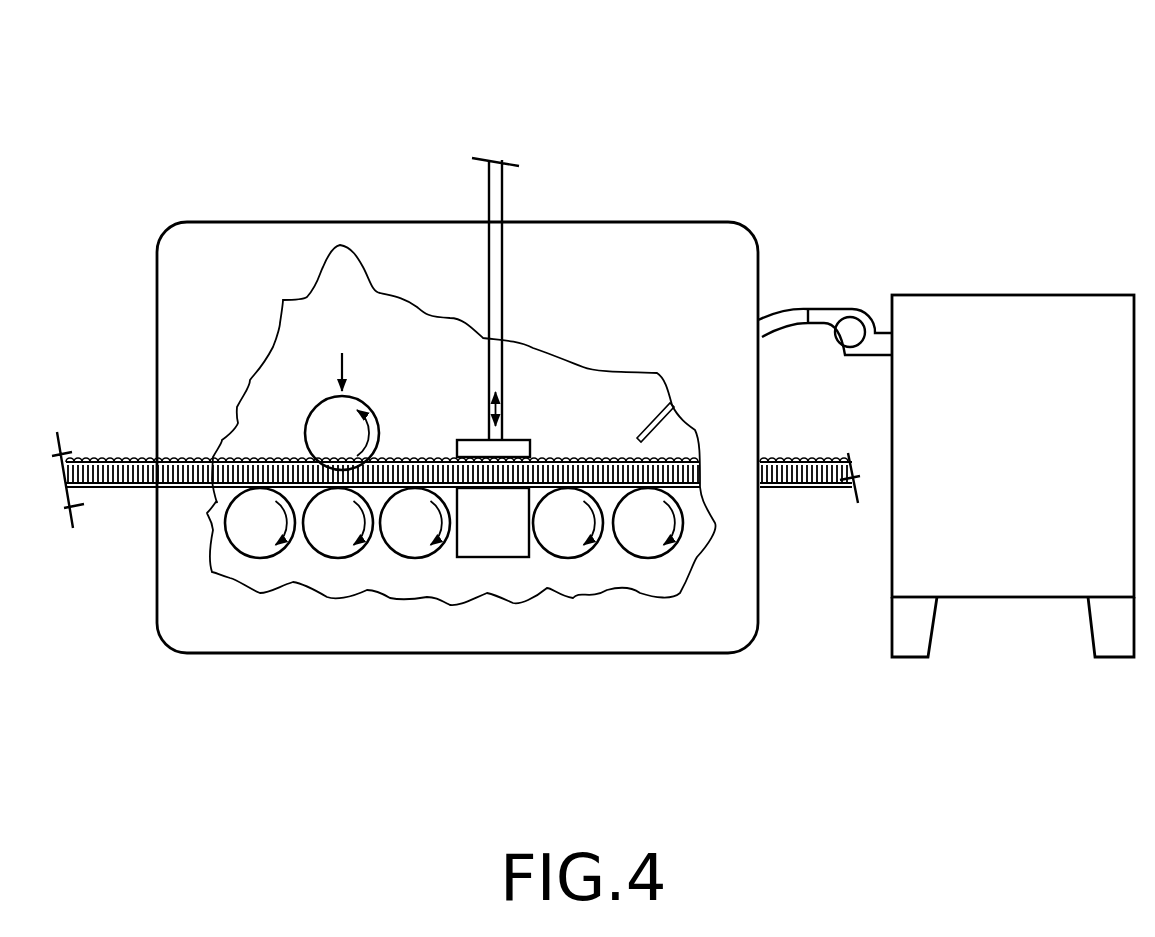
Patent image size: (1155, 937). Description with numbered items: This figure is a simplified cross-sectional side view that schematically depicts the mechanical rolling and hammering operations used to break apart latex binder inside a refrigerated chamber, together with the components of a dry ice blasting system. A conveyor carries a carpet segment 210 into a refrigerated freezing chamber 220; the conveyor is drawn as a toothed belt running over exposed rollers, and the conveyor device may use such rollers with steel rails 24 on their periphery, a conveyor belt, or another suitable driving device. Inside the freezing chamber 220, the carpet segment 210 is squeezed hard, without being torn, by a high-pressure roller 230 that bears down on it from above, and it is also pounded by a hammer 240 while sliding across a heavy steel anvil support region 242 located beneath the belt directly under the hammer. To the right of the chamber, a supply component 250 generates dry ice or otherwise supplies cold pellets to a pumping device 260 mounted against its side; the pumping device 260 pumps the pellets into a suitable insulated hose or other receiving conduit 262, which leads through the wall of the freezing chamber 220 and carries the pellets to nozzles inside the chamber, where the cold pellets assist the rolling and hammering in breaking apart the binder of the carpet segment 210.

The steel rails 24 is at (793, 460).
The carpet segment 210 is at (93, 458).
The refrigerated freezing chamber 220 is at (275, 219).
The high-pressure roller 230 is at (381, 406).
The hammer 240 is at (523, 410).
The heavy steel anvil support region 242 is at (497, 561).
The supply component 250 is at (1023, 292).
The pumping device 260 is at (861, 303).
The insulated hose or receiving conduit 262 is at (788, 308).